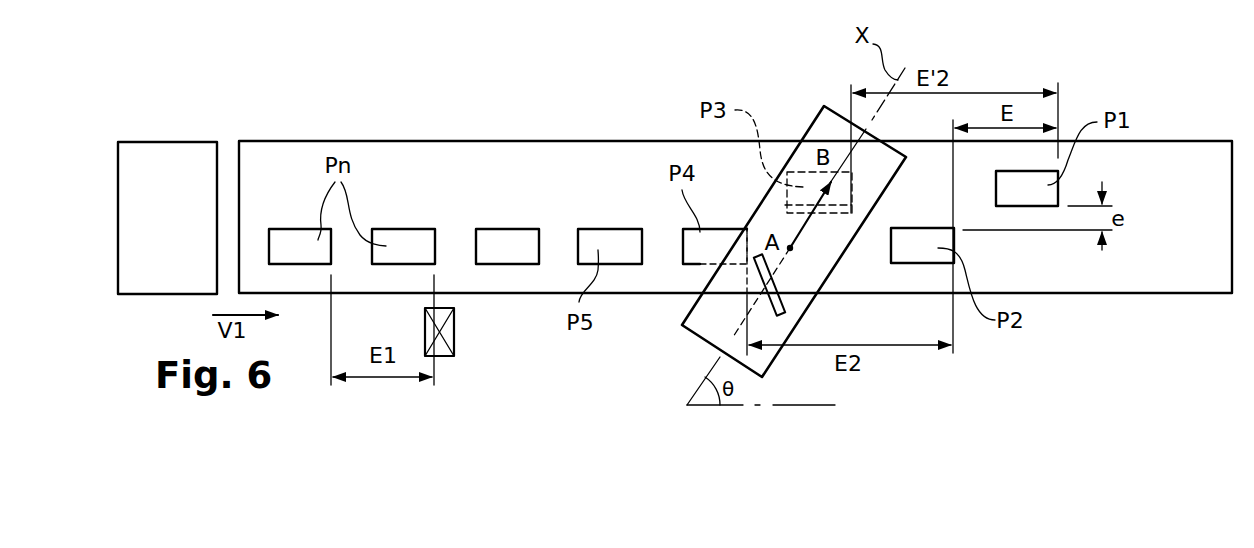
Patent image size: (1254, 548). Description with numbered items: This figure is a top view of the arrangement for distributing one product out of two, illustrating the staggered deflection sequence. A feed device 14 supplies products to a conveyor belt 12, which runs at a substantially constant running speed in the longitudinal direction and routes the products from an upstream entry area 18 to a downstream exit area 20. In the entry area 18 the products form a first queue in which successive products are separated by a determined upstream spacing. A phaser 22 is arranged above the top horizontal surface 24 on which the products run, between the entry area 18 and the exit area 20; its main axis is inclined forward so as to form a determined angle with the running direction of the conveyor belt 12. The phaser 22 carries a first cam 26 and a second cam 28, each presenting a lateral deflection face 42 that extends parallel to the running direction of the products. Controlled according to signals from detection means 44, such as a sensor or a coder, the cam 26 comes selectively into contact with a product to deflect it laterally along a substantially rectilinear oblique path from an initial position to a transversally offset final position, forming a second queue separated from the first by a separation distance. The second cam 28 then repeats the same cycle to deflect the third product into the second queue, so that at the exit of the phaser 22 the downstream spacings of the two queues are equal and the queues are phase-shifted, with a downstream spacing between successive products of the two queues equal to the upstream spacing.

The conveyor belt 12 is at (427, 166).
The feed device 14 is at (167, 218).
The entry area 18 is at (277, 165).
The exit area 20 is at (1186, 146).
The phaser 22 is at (710, 331).
The top horizontal surface 24 is at (485, 168).
The cam 26 is at (778, 313).
The second cam 28 is at (842, 208).
The lateral deflection face 42 is at (784, 280).
The detection means 44 is at (448, 328).